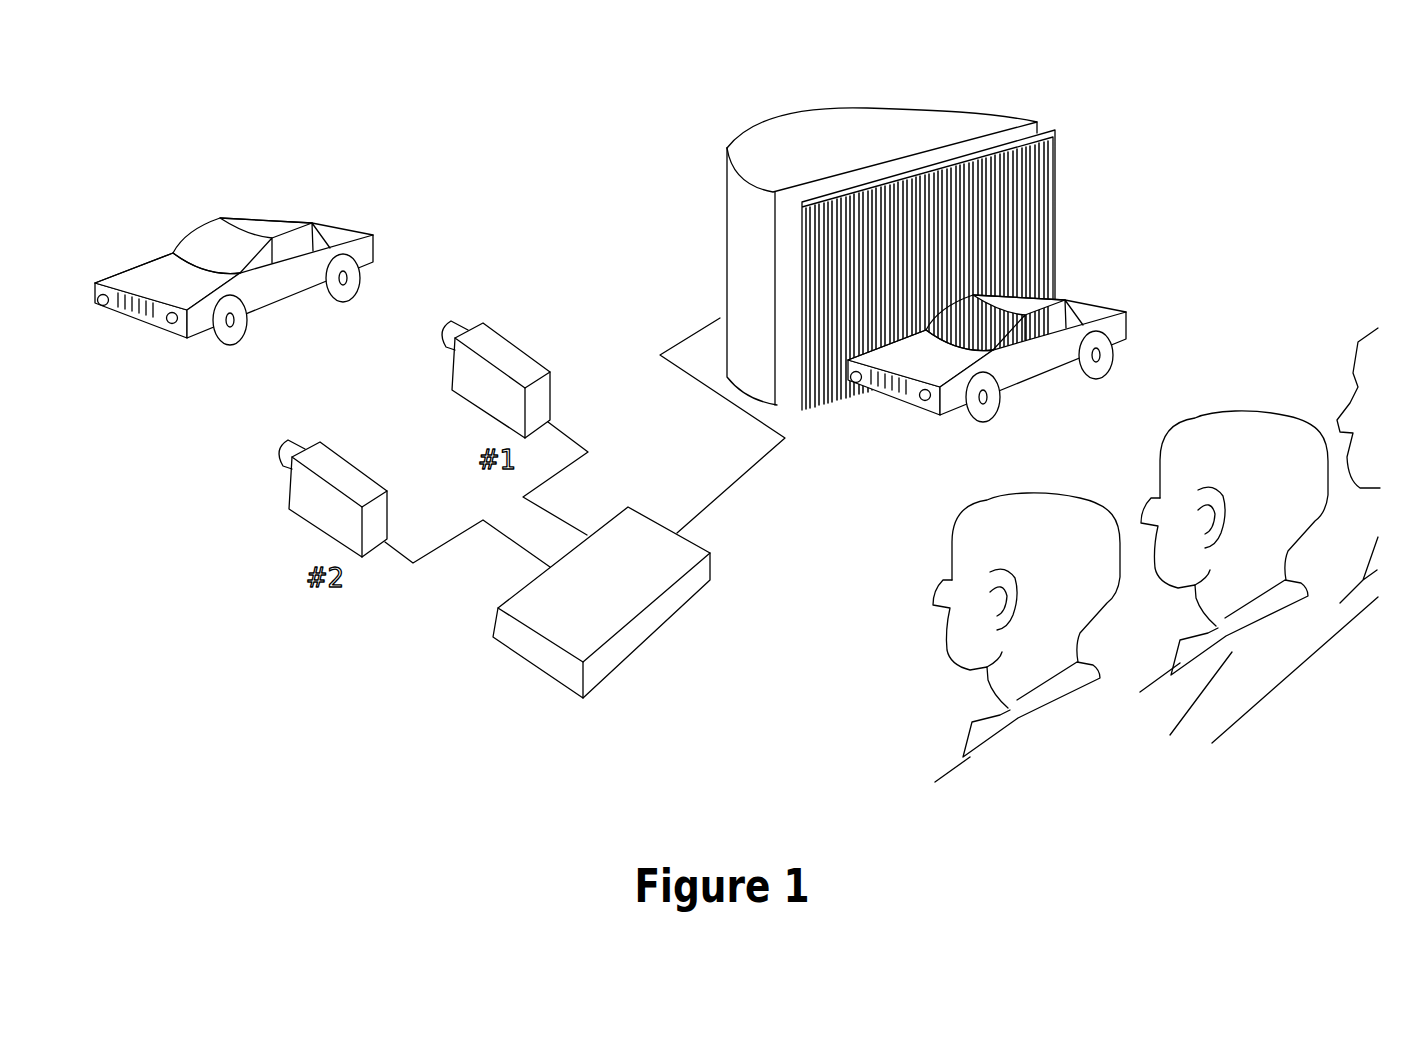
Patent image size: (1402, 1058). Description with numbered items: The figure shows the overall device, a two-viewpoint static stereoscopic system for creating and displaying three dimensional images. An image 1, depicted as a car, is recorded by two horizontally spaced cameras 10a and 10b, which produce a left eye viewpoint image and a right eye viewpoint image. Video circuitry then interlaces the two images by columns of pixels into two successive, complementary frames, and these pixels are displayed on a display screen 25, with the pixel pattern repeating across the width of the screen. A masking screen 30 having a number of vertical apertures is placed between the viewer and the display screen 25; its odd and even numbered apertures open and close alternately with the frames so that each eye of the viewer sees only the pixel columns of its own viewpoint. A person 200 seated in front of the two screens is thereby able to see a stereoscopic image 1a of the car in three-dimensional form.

The image 1 is at (252, 200).
The stereoscopic image 1a is at (1112, 290).
The camera 10a is at (280, 525).
The camera 10b is at (463, 385).
The display screen 25 is at (973, 122).
The masking screen 30 is at (1037, 205).
The person 200 is at (1037, 715).